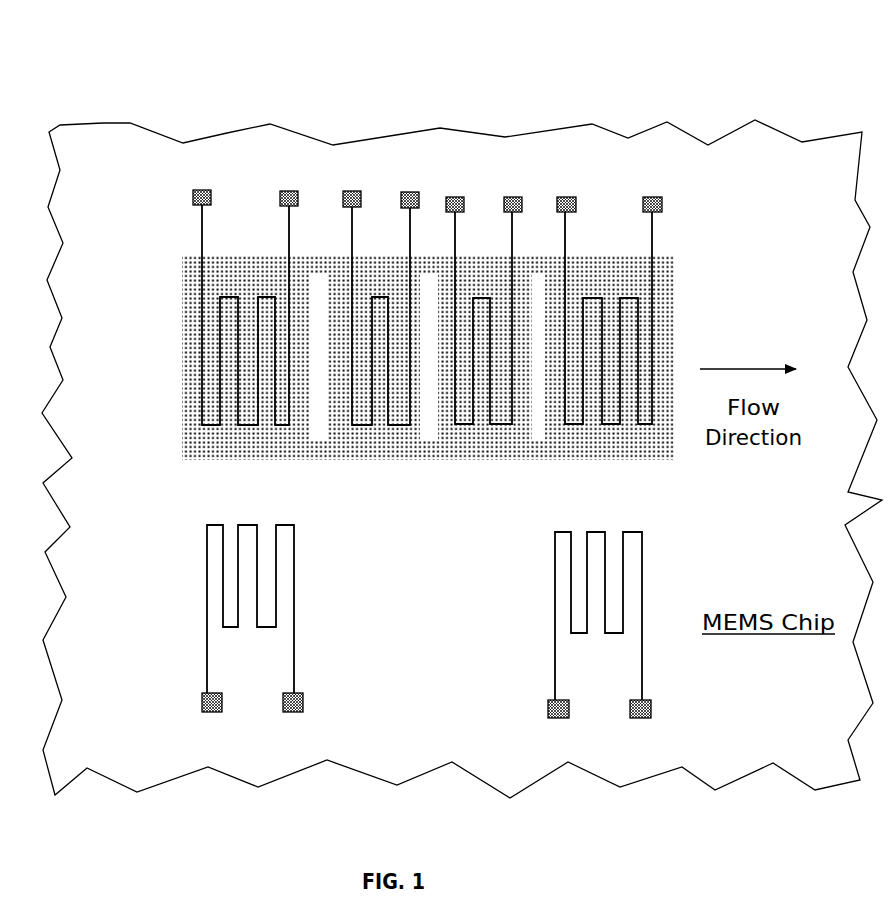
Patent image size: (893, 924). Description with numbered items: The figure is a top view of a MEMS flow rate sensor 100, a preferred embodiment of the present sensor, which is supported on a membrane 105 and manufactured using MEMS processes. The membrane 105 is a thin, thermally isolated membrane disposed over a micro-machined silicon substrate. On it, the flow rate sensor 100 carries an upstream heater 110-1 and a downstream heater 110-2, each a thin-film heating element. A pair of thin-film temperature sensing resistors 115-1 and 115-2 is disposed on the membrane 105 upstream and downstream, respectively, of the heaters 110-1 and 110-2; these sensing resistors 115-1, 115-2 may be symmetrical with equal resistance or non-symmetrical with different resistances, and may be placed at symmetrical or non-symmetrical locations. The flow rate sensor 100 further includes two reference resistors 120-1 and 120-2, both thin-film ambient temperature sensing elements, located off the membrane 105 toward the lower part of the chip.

The flow rate sensor 100 is at (630, 109).
The membrane 105 is at (645, 472).
The upstream heater 110-1 is at (366, 434).
The downstream heater 110-2 is at (483, 436).
The upstream temperature sensing resistor 115-1 is at (184, 351).
The downstream temperature sensing resistor 115-2 is at (666, 341).
The reference resistor 120-1 is at (202, 569).
The reference resistor 120-2 is at (549, 579).